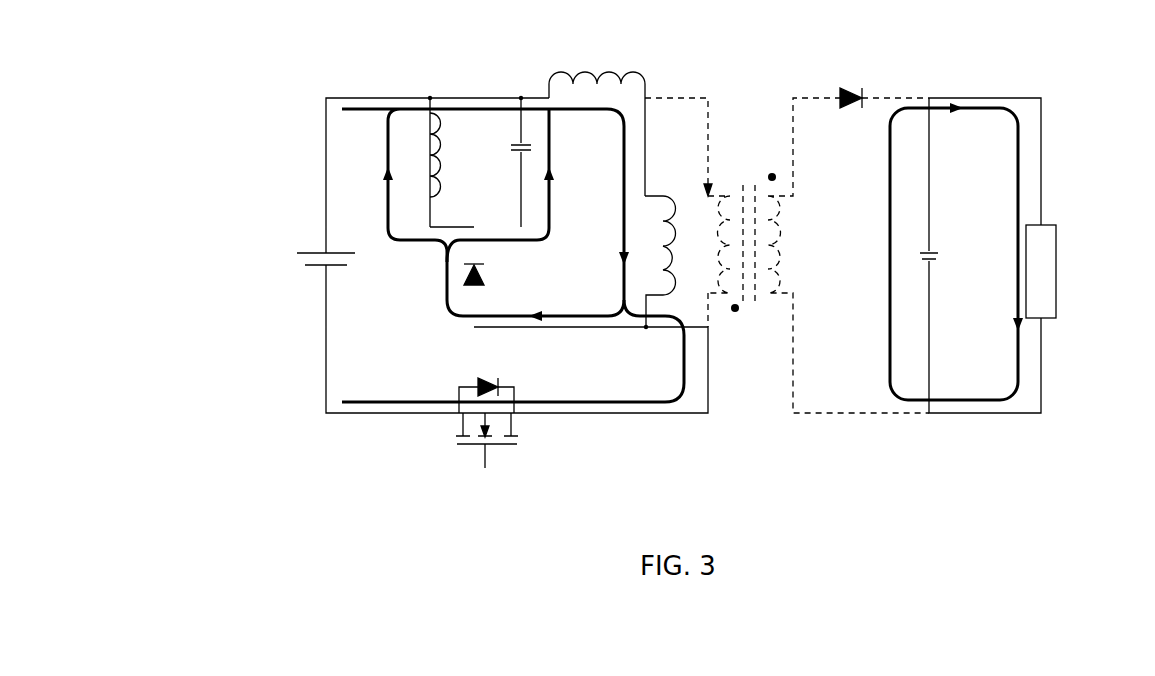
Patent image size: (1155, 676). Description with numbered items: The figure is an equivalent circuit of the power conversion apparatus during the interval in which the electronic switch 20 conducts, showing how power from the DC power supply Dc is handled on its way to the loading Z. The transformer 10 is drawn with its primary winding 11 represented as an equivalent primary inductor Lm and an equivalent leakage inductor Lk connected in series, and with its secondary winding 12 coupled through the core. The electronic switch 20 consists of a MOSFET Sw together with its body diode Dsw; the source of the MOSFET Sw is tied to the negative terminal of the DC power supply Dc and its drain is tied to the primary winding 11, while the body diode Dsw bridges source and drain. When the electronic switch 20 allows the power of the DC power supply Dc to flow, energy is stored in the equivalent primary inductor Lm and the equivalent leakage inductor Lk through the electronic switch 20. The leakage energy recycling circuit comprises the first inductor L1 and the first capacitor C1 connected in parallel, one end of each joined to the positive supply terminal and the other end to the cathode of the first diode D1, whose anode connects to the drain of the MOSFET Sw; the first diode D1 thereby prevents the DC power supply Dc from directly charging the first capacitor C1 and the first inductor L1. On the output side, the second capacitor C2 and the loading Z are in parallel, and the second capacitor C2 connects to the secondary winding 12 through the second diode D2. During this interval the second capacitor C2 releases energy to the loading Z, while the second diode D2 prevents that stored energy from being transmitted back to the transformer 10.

The transformer 10 is at (750, 178).
The primary winding 11 is at (726, 248).
The secondary winding 12 is at (770, 248).
The electronic switch 20 is at (458, 458).
The DC power supply Dc is at (306, 257).
The first inductor L1 is at (448, 155).
The first capacitor C1 is at (531, 136).
The first diode D1 is at (491, 277).
The equivalent leakage inductor Lk is at (597, 134).
The equivalent primary inductor Lm is at (651, 261).
The second diode D2 is at (884, 85).
The second capacitor C2 is at (941, 272).
The loading Z is at (1056, 272).
The body diode Dsw is at (487, 384).
The MOSFET Sw is at (487, 459).